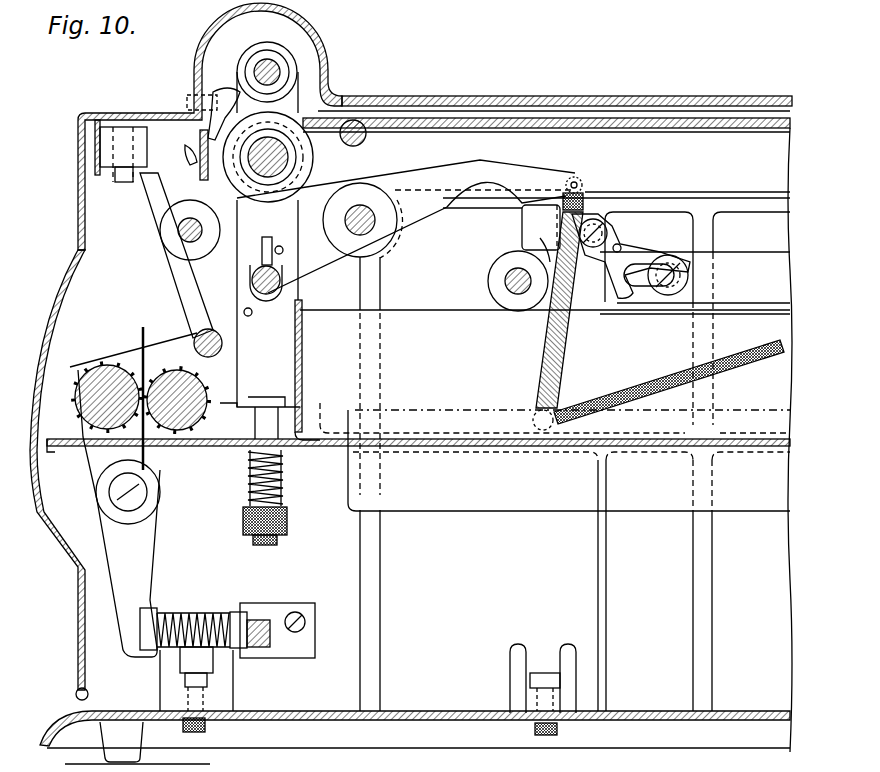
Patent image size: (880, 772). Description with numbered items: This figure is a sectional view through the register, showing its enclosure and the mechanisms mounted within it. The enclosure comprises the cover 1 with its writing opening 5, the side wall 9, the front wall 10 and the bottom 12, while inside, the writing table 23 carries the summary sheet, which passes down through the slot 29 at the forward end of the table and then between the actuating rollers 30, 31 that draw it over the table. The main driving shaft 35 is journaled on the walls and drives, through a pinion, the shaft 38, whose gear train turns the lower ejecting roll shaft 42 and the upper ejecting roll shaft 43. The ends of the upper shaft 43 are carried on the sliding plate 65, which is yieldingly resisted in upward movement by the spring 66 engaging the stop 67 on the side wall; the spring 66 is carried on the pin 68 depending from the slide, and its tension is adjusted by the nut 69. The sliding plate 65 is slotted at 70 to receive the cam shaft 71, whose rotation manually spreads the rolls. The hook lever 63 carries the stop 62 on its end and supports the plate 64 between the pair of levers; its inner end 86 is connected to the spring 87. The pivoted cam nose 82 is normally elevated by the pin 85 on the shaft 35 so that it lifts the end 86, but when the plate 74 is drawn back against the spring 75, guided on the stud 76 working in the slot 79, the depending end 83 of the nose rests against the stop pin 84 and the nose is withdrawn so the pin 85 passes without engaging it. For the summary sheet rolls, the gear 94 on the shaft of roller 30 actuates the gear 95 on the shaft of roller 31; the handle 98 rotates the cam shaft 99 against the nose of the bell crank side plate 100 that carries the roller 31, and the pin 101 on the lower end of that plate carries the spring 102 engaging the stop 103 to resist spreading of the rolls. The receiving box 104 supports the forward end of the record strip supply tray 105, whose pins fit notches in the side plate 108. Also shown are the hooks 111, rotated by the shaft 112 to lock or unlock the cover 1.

The cover 1 is at (436, 97).
The writing opening 5 is at (740, 104).
The side wall 9 is at (50, 259).
The front wall 10 is at (77, 197).
The bottom 12 is at (408, 712).
The writing table 23 is at (663, 130).
The slot 29 is at (395, 121).
The actuating roller 30 is at (185, 440).
The actuating roller 31 is at (96, 397).
The shaft 35 is at (506, 281).
The shaft 38 is at (368, 237).
The lower ejecting roll shaft 42 is at (284, 158).
The upper ejecting roll shaft 43 is at (282, 66).
The stop 62 is at (227, 92).
The hook lever 63 is at (213, 178).
The plate 64 is at (198, 112).
The sliding plate 65 is at (287, 335).
The spring 66 is at (246, 496).
The stop 67 is at (317, 403).
The pin 68 is at (253, 541).
The nut 69 is at (243, 518).
The slot 70 is at (300, 310).
The cam shaft 71 is at (287, 300).
The plate 74 is at (729, 258).
The spring 75 is at (672, 373).
The stud 76 is at (694, 256).
The slot 79 is at (642, 267).
The cam nose 82 is at (522, 227).
The depending end 83 is at (603, 258).
The stop pin 84 is at (619, 245).
The pin 85 is at (544, 233).
The inner end of the lever 86 is at (528, 171).
The spring 87 is at (540, 353).
The gear 94 is at (196, 381).
The gear 95 is at (93, 366).
The handle 98 is at (160, 272).
The cam shaft 99 is at (223, 344).
The bell crank side plate 100 is at (128, 352).
The pin 101 is at (263, 620).
The spring 102 is at (203, 613).
The stop 103 is at (241, 658).
The receiving box 104 is at (607, 603).
The record strip supply tray 105 is at (425, 320).
The side plate 108 is at (711, 492).
The hook 111 is at (172, 120).
The shaft 112 is at (185, 229).